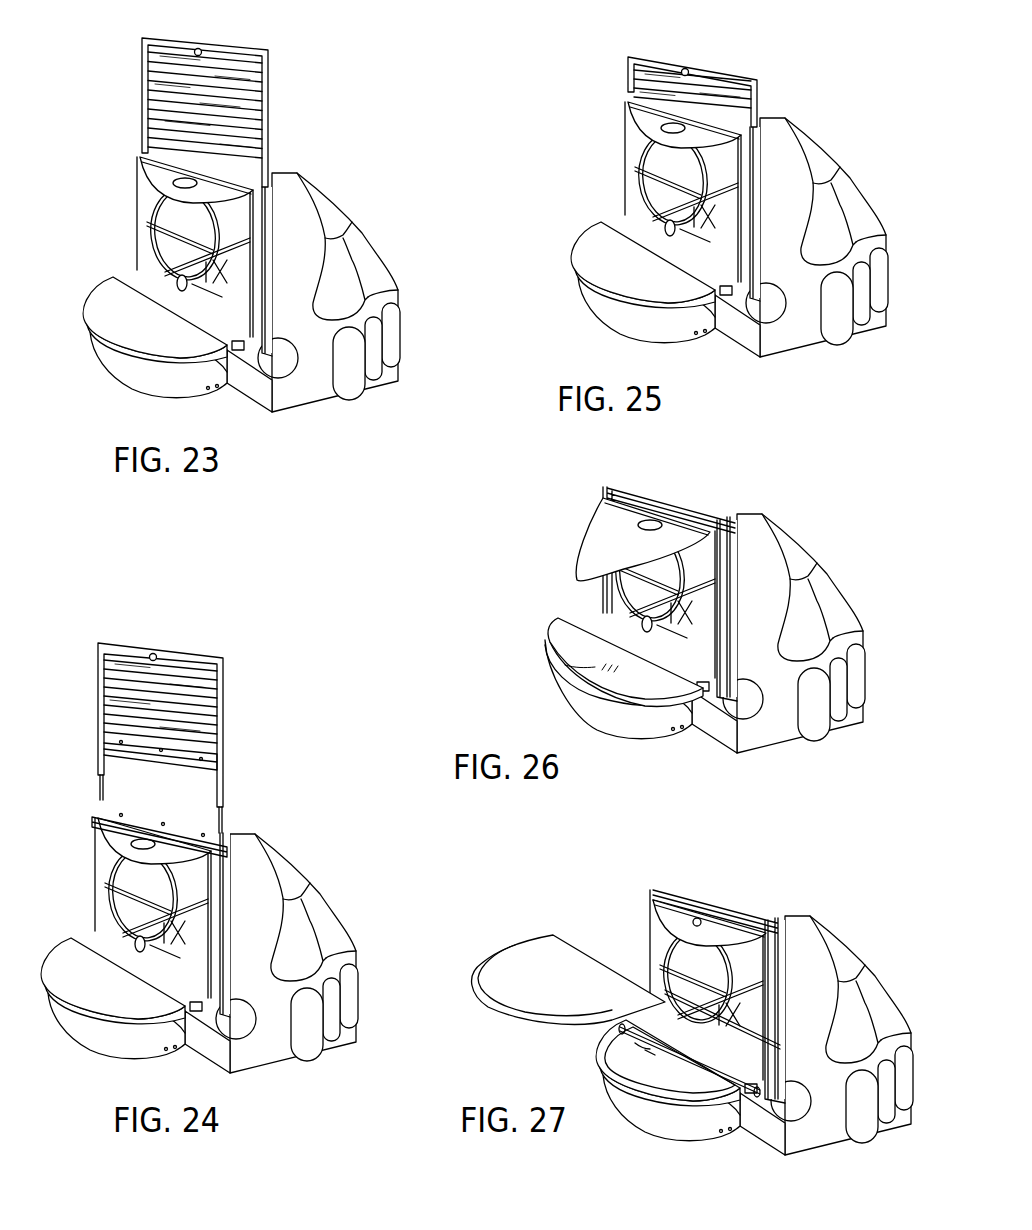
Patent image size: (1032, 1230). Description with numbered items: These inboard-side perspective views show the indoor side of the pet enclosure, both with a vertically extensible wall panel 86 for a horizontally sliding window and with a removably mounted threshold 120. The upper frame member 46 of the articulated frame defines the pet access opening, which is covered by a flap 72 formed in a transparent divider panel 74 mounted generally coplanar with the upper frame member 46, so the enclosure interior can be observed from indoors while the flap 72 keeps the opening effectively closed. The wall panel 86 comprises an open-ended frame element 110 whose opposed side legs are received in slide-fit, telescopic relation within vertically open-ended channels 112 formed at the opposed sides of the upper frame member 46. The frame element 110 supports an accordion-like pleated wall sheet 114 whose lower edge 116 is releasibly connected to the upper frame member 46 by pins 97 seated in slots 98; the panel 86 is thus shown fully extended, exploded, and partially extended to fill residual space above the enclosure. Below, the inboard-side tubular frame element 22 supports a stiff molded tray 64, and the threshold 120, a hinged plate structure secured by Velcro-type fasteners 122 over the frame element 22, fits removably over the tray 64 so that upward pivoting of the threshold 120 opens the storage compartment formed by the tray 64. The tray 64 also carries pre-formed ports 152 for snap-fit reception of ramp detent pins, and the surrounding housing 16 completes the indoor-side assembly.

In FIG. 23, the housing body 16 is at (380, 250).
In FIG. 26, the housing body 16 is at (790, 550).
In FIG. 27, the housing body 16 is at (857, 963).
In FIG. 23, the inboard-side tubular frame element 22 is at (87, 327).
In FIG. 27, the inboard-side tubular frame element 22 is at (673, 1095).
In FIG. 26, the upper frame member 46 is at (733, 545).
In FIG. 27, the upper frame member 46 is at (780, 938).
In FIG. 23, the tray 64 is at (135, 383).
In FIG. 27, the tray 64 is at (687, 1137).
In FIG. 26, the flap 72 is at (595, 567).
In FIG. 23, the divider panel 74 is at (145, 192).
In FIG. 23, the vertically extensible wall panel 86 is at (211, 100).
In FIG. 25, the vertically extensible wall panel 86 is at (687, 72).
In FIG. 24, the vertically extensible wall panel 86 is at (177, 722).
In FIG. 24, the pins 97 is at (128, 736).
In FIG. 24, the slots 98 is at (128, 810).
In FIG. 23, the open-ended frame element 110 is at (247, 45).
In FIG. 25, the open-ended frame element 110 is at (650, 60).
In FIG. 24, the open-ended frame element 110 is at (192, 655).
In FIG. 24, the vertically open-ended channels 112 is at (110, 817).
In FIG. 23, the pleated wall sheet 114 is at (163, 97).
In FIG. 25, the pleated wall sheet 114 is at (633, 73).
In FIG. 24, the pleated wall sheet 114 is at (113, 688).
In FIG. 24, the lower edge 116 is at (127, 757).
In FIG. 23, the threshold 120 is at (107, 307).
In FIG. 25, the threshold 120 is at (607, 243).
In FIG. 26, the threshold 120 is at (668, 663).
In FIG. 27, the threshold 120 is at (503, 940).
In FIG. 27, the Velcro-type fasteners 122 is at (745, 1066).
In FIG. 26, the ports 152 is at (673, 737).